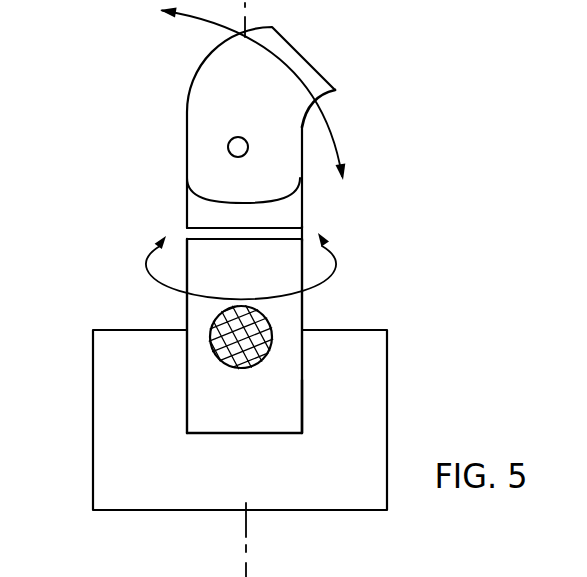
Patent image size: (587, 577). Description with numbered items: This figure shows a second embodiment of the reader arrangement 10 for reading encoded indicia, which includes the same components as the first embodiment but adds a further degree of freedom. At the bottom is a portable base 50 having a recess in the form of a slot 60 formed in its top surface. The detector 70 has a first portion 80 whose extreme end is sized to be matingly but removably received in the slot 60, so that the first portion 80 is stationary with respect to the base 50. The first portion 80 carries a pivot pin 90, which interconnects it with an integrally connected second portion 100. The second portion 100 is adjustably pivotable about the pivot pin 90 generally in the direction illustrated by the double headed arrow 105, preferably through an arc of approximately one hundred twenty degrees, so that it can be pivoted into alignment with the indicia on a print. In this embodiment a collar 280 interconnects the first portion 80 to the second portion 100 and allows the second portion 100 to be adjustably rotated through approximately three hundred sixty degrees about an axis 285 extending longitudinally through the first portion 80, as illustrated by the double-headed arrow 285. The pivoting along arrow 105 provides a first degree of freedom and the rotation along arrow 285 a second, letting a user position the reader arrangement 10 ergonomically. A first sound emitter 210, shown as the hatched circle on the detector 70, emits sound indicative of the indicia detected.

The reader arrangement 10 is at (112, 280).
The portable base 50 is at (388, 363).
The slot 60 is at (301, 389).
The detector 70 is at (187, 314).
The first portion 80 is at (187, 250).
The pivot pin 90 is at (228, 147).
The second portion 100 is at (191, 87).
The double headed arrow 105 is at (332, 137).
The first sound emitter 210 is at (235, 367).
The collar 280 is at (302, 231).
The axis / double-headed arrow 285 is at (337, 270).